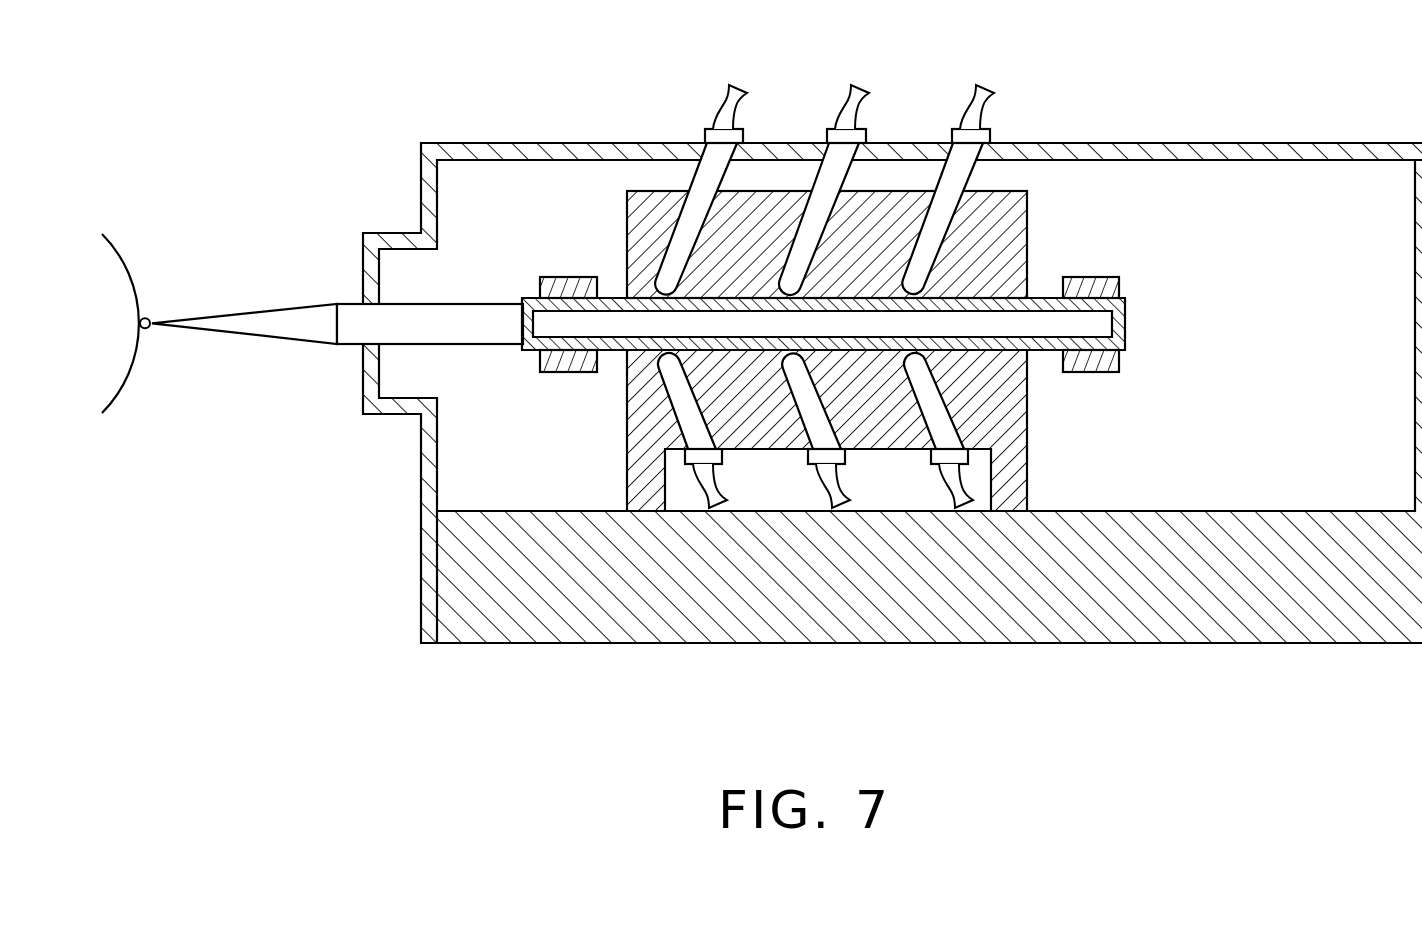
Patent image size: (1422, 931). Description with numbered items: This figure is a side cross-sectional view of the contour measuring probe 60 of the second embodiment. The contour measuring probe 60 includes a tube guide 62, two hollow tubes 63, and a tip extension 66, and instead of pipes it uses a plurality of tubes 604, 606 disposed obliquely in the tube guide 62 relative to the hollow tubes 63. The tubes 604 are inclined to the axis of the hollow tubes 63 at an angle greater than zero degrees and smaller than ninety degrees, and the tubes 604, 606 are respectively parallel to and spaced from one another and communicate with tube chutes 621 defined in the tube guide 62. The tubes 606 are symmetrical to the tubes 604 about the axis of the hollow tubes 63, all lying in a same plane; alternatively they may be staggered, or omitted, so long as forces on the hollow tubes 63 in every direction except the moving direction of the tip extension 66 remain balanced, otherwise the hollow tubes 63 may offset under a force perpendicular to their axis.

The contour measuring probe 60 is at (408, 105).
The tube guide 62 is at (883, 223).
The tube chutes 621 is at (1003, 353).
The hollow tubes 63 is at (1118, 323).
The tip extension 66 is at (357, 323).
The tubes 604 is at (823, 205).
The tubes 606 is at (677, 393).